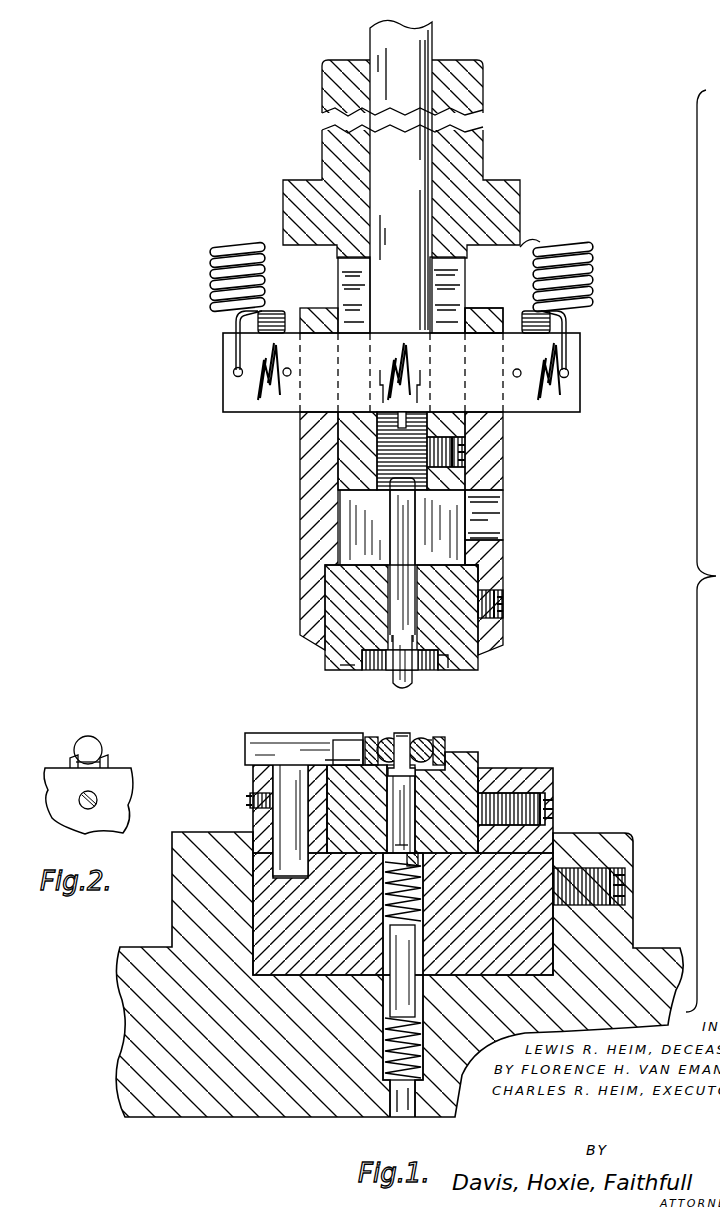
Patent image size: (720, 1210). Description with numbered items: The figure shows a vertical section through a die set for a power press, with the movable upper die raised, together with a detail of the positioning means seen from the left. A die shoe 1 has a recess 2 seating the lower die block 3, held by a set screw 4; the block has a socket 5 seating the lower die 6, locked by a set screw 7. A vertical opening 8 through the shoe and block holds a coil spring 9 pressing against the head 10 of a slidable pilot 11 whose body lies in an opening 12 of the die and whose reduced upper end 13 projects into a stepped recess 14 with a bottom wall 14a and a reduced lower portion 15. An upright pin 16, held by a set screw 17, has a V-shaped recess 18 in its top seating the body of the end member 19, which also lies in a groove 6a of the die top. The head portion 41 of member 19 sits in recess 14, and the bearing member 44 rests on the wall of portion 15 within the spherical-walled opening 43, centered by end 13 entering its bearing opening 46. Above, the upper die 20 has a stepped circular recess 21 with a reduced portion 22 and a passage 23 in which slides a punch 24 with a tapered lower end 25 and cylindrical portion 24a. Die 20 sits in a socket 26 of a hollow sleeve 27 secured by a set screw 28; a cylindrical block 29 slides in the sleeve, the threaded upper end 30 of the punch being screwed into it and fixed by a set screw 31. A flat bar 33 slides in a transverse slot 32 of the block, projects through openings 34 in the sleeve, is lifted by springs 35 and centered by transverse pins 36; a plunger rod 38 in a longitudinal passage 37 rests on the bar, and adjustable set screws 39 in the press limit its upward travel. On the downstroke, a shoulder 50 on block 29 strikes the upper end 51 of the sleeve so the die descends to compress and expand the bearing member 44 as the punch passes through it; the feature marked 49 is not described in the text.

In FIG. 1, the die shoe 1 is at (266, 1108).
In FIG. 1, the recess 2 is at (262, 836).
In FIG. 1, the lower die block 3 is at (546, 850).
In FIG. 1, the set screw 4 is at (626, 872).
In FIG. 1, the recess or socket 5 is at (480, 766).
In FIG. 1, the lower die 6 is at (479, 752).
In FIG. 2, the lower die 6 is at (50, 768).
In FIG. 1, the groove 6a is at (335, 748).
In FIG. 1, the set screw 7 is at (548, 802).
In FIG. 1, the vertical opening 8 is at (424, 1048).
In FIG. 1, the coil spring 9 is at (388, 1085).
In FIG. 1, the head 10 is at (420, 858).
In FIG. 1, the slidable pilot 11 is at (406, 832).
In FIG. 1, the opening 12 is at (401, 809).
In FIG. 1, the reduced upper end 13 is at (413, 720).
In FIG. 1, the recess 14 is at (450, 760).
In FIG. 1, the bottom wall 14a is at (444, 740).
In FIG. 1, the reduced lower portion 15 is at (357, 809).
In FIG. 1, the upright pin 16 is at (282, 782).
In FIG. 2, the upright pin 16 is at (112, 760).
In FIG. 1, the set screw 17 is at (250, 800).
In FIG. 2, the set screw 17 is at (81, 808).
In FIG. 2, the V or tapered recess 18 is at (80, 745).
In FIG. 1, the end member 19 is at (268, 735).
In FIG. 2, the end member 19 is at (94, 745).
In FIG. 1, the upper die 20 is at (346, 672).
In FIG. 1, the stepped circular recess 21 is at (440, 672).
In FIG. 1, the reduced portion 22 is at (376, 670).
In FIG. 1, the passage or opening 23 is at (390, 582).
In FIG. 1, the punch 24 is at (405, 548).
In FIG. 1, the cylindrical portion 24a is at (396, 620).
In FIG. 1, the tapered and reduced lower end portion 25 is at (412, 683).
In FIG. 1, the recess or socket 26 is at (470, 584).
In FIG. 1, the hollow sleeve 27 is at (498, 556).
In FIG. 1, the set screw 28 is at (500, 609).
In FIG. 1, the cylindrical block 29 is at (345, 452).
In FIG. 1, the enlarged threaded upper end 30 is at (388, 483).
In FIG. 1, the set screw 31 is at (466, 446).
In FIG. 1, the transverse elongated slot 32 is at (465, 290).
In FIG. 1, the flat bar 33 is at (258, 406).
In FIG. 1, the openings 34 is at (485, 334).
In FIG. 1, the springs 35 is at (210, 278).
In FIG. 1, the transverse pins 36 is at (291, 372).
In FIG. 1, the longitudinal passage 37 is at (430, 178).
In FIG. 1, the plunger rod 38 is at (415, 150).
In FIG. 1, the adjustable set screws 39 is at (275, 314).
In FIG. 1, the head portion 41 is at (434, 740).
In FIG. 1, the peripheral side walls 43 is at (348, 752).
In FIG. 1, the bearing member 44 is at (384, 738).
In FIG. 1, the bearing opening 46 is at (400, 732).
In FIG. 1, the ball 49 is at (421, 741).
In FIG. 1, the shoulder 50 is at (522, 246).
In FIG. 1, the upper end 51 is at (482, 306).